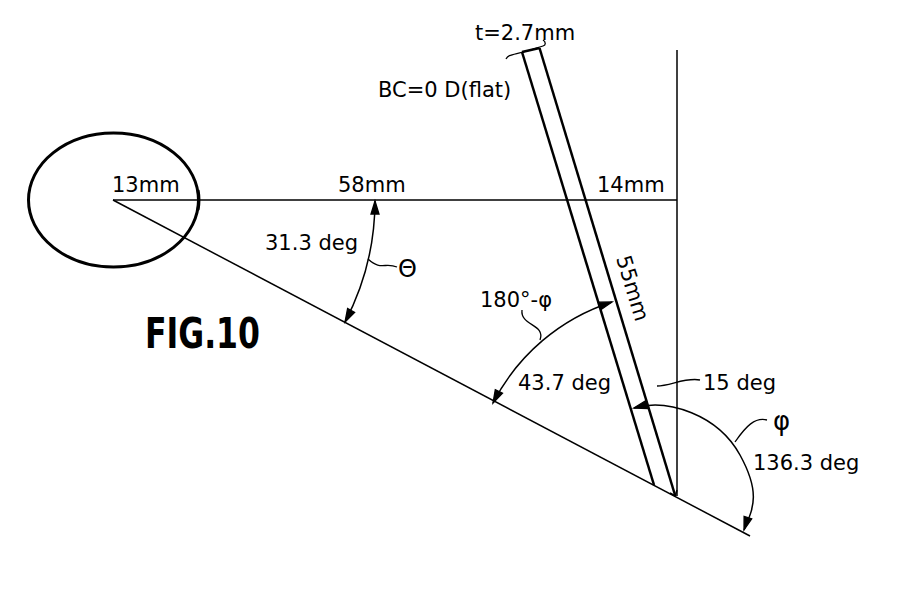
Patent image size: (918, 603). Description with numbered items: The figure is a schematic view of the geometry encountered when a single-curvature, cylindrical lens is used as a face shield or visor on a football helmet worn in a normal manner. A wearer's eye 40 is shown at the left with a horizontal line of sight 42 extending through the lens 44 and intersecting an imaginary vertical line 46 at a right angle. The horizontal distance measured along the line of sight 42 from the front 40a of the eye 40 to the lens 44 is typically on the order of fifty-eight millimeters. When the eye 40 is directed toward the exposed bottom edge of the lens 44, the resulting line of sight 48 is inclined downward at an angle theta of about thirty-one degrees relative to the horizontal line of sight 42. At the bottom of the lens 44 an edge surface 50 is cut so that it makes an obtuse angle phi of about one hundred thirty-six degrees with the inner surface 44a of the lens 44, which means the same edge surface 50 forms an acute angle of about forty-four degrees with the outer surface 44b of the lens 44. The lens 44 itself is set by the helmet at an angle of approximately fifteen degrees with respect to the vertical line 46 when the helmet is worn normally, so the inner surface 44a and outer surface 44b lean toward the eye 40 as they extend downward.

The wearer's eye 40 is at (115, 133).
The front of the eye 40a is at (198, 200).
The horizontal line of sight 42 is at (288, 200).
The lens 44 is at (589, 272).
The inner surface of the lens 44a is at (579, 245).
The outer surface of the lens 44b is at (596, 230).
The imaginary vertical line 46 is at (677, 136).
The inclined line of sight 48 is at (442, 375).
The edge surface 50 is at (666, 502).